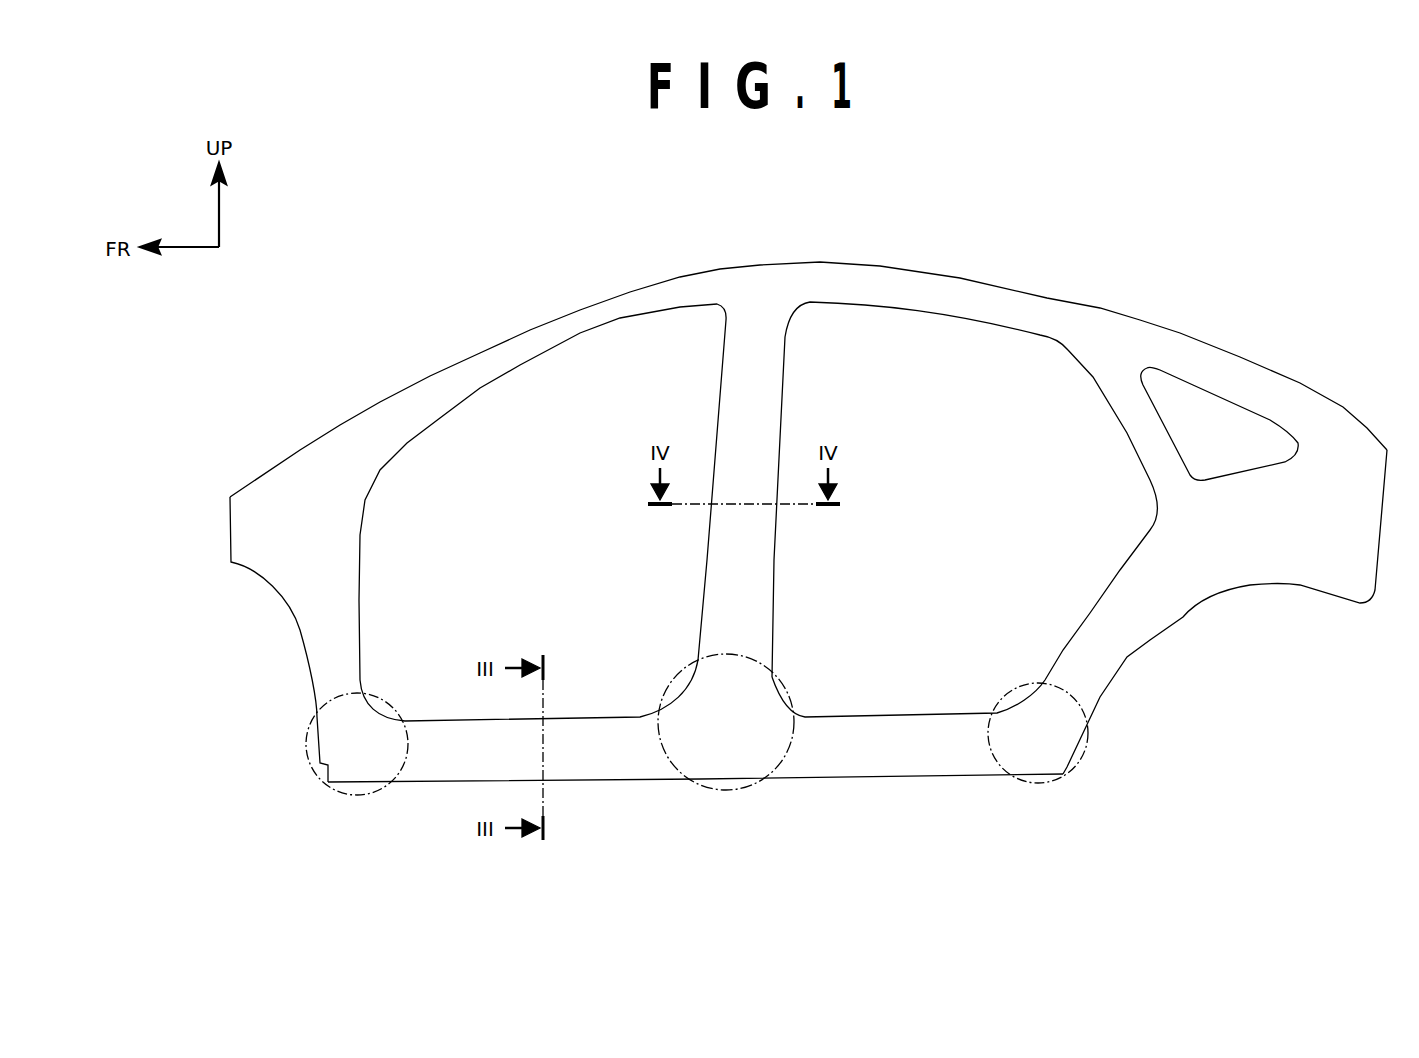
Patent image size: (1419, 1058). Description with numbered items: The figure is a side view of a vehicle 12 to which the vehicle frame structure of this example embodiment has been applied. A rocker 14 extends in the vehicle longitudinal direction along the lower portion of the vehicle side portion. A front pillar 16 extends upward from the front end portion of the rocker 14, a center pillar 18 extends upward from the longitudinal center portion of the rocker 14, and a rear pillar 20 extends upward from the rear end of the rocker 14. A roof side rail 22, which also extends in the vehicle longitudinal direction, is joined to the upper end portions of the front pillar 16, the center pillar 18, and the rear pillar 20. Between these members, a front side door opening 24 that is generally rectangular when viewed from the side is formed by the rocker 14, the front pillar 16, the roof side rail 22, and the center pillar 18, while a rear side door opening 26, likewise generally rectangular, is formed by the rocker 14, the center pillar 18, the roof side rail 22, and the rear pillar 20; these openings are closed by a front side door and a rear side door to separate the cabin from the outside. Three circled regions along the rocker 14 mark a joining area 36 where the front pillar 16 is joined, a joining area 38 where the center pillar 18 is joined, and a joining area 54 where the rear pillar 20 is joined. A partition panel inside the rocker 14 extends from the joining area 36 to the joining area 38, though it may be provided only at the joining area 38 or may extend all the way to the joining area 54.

The vehicle 12 is at (1165, 228).
The rocker 14 is at (887, 763).
The front pillar 16 is at (318, 663).
The center pillar 18 is at (762, 547).
The rear pillar 20 is at (1133, 637).
The roof side rail 22 is at (895, 280).
The front side door opening 24 is at (542, 512).
The rear side door opening 26 is at (965, 509).
The joining area 36 is at (360, 795).
The joining area 38 is at (735, 790).
The joining area 54 is at (1048, 783).